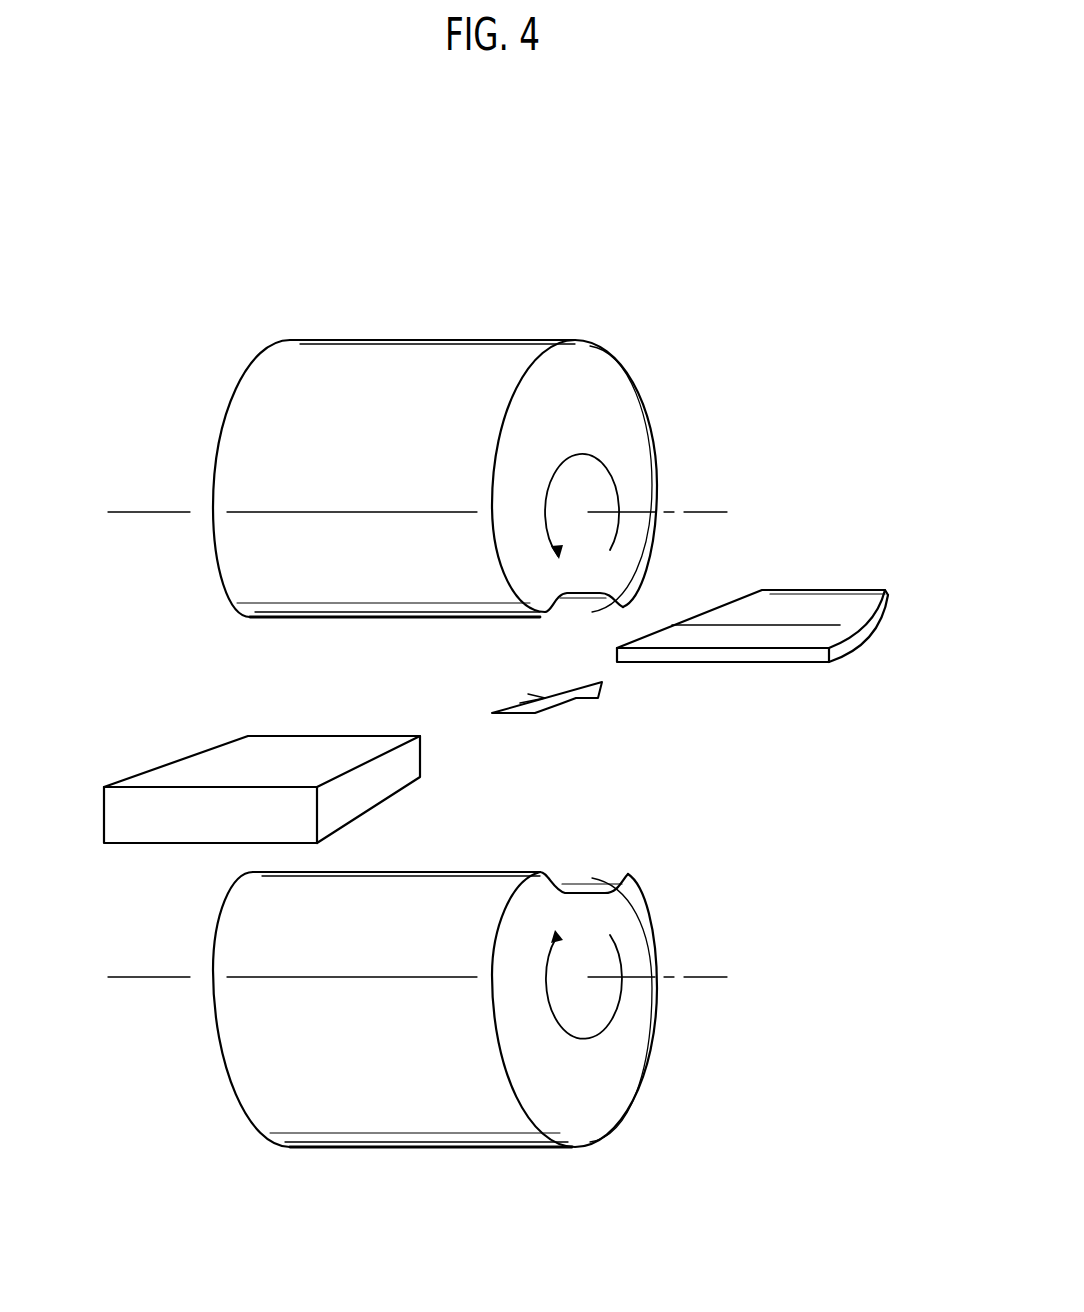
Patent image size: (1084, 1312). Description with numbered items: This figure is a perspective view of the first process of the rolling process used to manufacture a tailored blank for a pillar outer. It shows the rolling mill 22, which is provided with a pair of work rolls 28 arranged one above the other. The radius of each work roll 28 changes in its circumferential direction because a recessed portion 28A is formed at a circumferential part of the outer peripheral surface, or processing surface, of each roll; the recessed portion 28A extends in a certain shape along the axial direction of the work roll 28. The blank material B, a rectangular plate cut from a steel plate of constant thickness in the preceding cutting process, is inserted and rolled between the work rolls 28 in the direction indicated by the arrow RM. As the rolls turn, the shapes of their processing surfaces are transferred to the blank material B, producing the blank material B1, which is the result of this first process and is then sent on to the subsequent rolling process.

The rolling mill 22 is at (700, 302).
The work roll 28 is at (658, 440).
The recessed portion 28A is at (600, 595).
The blank material B is at (167, 828).
The blank material B1 is at (812, 607).
The arrow RM is at (552, 702).